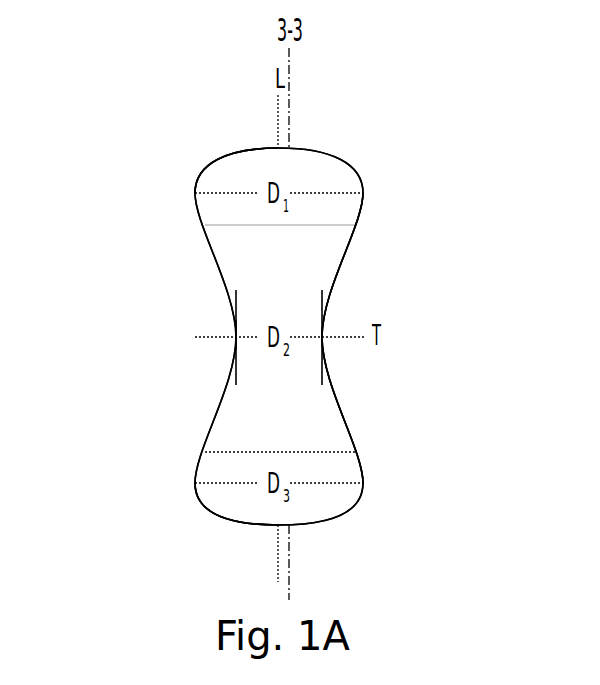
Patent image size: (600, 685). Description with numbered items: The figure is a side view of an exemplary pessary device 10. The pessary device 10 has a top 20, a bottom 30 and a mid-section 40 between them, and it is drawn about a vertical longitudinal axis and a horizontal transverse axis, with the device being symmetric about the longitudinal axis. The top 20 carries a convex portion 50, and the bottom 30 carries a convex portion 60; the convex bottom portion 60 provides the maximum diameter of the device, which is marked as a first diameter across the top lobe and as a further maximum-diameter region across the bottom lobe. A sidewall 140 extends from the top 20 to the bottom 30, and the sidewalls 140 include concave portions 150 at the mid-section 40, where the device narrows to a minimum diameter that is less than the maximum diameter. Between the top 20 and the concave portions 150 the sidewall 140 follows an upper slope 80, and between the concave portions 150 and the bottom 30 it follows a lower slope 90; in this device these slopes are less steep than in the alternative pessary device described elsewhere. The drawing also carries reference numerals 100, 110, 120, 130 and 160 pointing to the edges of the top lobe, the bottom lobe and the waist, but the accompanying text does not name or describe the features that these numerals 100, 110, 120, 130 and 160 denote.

The pessary device 10 is at (130, 103).
The top 20 is at (365, 173).
The bottom 30 is at (362, 496).
The mid-section 40 is at (326, 325).
The convex portion of the top 50 is at (365, 193).
The convex portion of the bottom 60 is at (363, 483).
The upper slope 80 is at (345, 252).
The lower slope 90 is at (348, 425).
The first end surface 100 is at (196, 180).
The first shoulder 110 is at (195, 193).
The second end surface 120 is at (207, 515).
The second shoulder 130 is at (195, 483).
The sidewall 140 is at (330, 287).
The concave portion 150 is at (327, 352).
The waist 160 is at (237, 325).